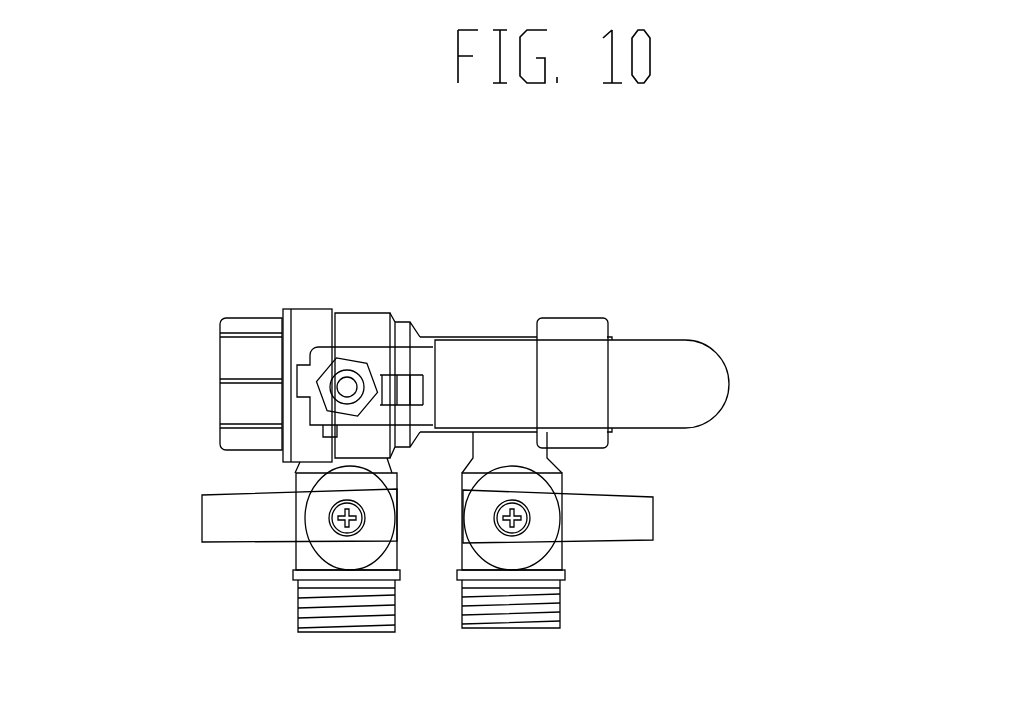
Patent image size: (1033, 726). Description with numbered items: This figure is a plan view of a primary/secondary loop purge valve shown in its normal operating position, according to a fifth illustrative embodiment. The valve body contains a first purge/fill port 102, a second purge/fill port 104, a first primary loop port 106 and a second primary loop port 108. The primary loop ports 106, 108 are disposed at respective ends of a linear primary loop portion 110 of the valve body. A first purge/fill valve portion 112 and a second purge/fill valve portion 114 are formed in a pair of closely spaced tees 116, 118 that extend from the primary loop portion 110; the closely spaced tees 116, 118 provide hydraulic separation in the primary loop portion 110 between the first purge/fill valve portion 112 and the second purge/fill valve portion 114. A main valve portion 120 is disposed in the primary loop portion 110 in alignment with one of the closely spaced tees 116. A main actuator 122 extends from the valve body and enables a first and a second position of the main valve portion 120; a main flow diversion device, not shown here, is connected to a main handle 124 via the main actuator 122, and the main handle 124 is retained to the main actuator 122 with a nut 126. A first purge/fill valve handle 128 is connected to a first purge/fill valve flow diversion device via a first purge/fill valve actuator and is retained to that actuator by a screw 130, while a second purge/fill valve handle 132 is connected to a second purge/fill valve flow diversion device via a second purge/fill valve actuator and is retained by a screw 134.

The first purge/fill port 102 is at (343, 632).
The second purge/fill port 104 is at (508, 630).
The first primary loop port 106 is at (220, 381).
The second primary loop port 108 is at (612, 332).
The primary loop portion 110 is at (475, 336).
The first purge/fill valve portion 112 is at (291, 556).
The second purge/fill valve portion 114 is at (568, 556).
The tee 116 is at (290, 476).
The tee 118 is at (560, 465).
The main valve portion 120 is at (307, 308).
The main actuator 122 is at (330, 396).
The main handle 124 is at (710, 339).
The nut 126 is at (331, 417).
The first purge/fill valve handle 128 is at (205, 547).
The screw 130 is at (336, 538).
The second purge/fill valve handle 132 is at (658, 547).
The screw 134 is at (522, 533).